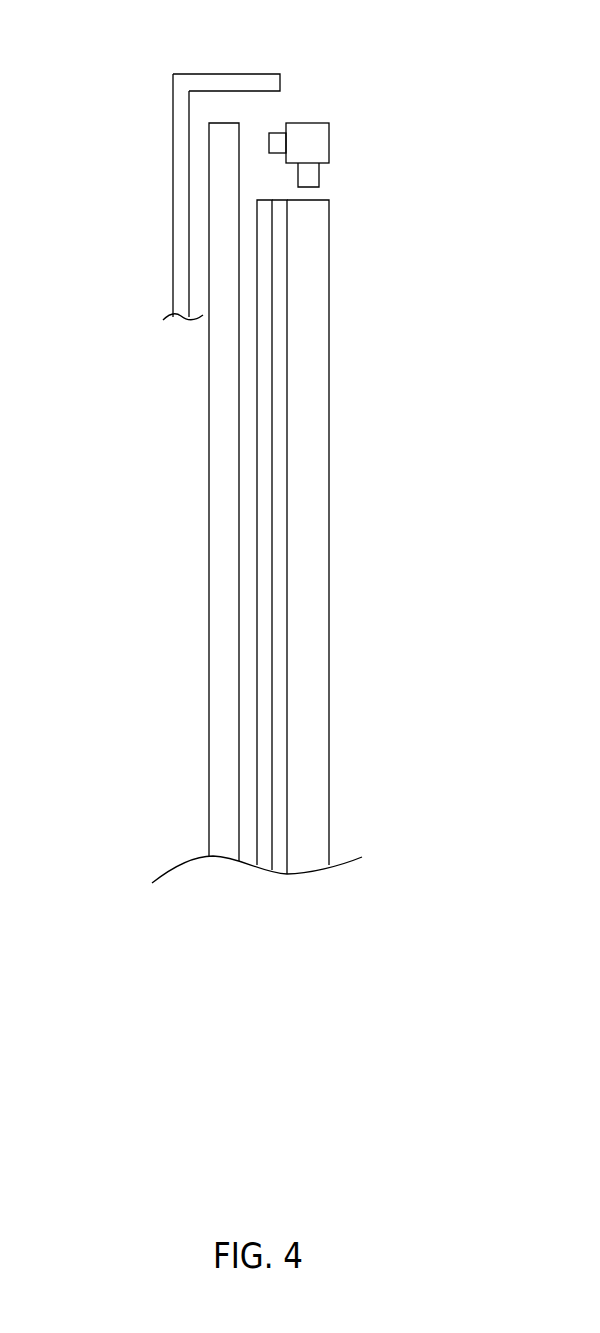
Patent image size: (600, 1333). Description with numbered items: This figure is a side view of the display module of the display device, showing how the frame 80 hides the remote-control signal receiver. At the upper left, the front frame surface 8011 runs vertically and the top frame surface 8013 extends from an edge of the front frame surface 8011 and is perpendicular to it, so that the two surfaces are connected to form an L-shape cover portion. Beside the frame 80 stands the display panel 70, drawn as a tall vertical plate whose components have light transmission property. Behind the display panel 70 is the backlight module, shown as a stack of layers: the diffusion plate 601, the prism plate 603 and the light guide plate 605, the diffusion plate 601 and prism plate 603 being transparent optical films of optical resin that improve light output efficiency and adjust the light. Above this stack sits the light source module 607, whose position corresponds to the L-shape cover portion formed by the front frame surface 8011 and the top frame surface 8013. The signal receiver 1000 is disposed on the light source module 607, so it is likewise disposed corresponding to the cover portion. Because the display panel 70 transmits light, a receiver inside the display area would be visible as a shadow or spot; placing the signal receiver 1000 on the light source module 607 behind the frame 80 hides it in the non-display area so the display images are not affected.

The frame 80 is at (118, 0).
The front frame surface 8011 is at (180, 173).
The top frame surface 8013 is at (228, 83).
The display panel 70 is at (217, 503).
The signal receiver 1000 is at (276, 140).
The light source module 607 is at (320, 143).
The diffusion plate 601 is at (263, 528).
The prism plate 603 is at (282, 405).
The light guide plate 605 is at (315, 261).